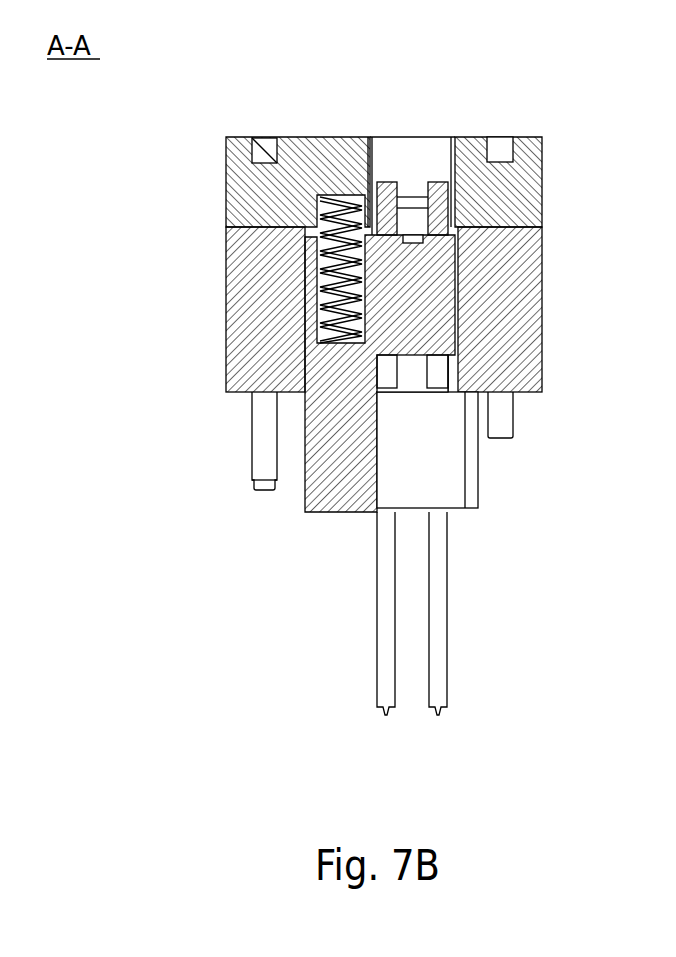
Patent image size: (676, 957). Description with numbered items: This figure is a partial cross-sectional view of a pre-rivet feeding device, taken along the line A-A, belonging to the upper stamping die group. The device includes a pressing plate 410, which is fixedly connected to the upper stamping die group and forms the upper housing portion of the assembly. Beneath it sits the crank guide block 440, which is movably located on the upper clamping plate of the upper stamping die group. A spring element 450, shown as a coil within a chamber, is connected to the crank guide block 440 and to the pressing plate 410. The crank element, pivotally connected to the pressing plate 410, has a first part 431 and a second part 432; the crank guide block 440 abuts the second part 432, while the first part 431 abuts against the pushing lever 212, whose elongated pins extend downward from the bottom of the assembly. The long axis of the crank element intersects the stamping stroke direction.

The pressing plate 410 is at (518, 197).
The second part 432 is at (441, 188).
The crank guide block 440 is at (440, 297).
The spring element 450 is at (320, 268).
The first part 431 is at (440, 372).
The pushing lever 212 is at (383, 633).